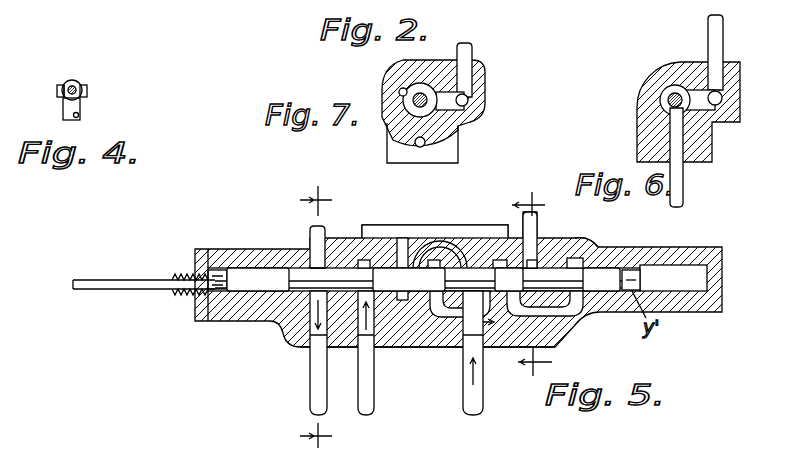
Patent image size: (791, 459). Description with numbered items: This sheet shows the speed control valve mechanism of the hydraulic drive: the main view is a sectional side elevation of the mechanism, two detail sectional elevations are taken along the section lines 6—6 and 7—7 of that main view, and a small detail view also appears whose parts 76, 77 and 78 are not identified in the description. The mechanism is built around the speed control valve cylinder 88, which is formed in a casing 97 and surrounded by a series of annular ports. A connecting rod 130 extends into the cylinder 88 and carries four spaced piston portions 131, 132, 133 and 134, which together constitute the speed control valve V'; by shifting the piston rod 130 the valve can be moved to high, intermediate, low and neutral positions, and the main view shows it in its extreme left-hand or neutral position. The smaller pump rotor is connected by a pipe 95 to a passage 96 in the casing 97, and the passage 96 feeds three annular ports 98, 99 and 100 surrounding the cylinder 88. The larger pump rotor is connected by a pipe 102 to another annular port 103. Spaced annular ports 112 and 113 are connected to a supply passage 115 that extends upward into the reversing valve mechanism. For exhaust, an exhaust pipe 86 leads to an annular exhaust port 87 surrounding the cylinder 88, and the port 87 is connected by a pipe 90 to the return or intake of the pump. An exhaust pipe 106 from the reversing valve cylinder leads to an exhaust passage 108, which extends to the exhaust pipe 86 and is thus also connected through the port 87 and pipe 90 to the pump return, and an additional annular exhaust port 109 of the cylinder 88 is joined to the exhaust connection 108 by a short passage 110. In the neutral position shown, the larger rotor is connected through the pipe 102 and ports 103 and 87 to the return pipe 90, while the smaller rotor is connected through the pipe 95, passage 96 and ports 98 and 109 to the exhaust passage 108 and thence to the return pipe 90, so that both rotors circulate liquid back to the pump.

In FIG. 4, the pin 76 is at (79, 115).
In FIG. 4, the head 77 is at (80, 84).
In FIG. 4, the nut 78 is at (65, 84).
In FIG. 6, the exhaust pipe 86 is at (715, 36).
In FIG. 5, the exhaust pipe 86 is at (322, 232).
In FIG. 6, the annular exhaust port 87 is at (687, 110).
In FIG. 5, the annular exhaust port 87 is at (316, 266).
In FIG. 6, the speed control valve cylinder 88 is at (667, 99).
In FIG. 5, the speed control valve cylinder 88 is at (296, 300).
In FIG. 6, the return pipe 90 is at (684, 175).
In FIG. 5, the return pipe 90 is at (311, 384).
In FIG. 5, the pipe 95 is at (480, 400).
In FIG. 7, the passage 96 is at (416, 143).
In FIG. 5, the passage 96 is at (540, 322).
In FIG. 5, the casing 97 is at (412, 347).
In FIG. 5, the annular port 98 is at (588, 240).
In FIG. 5, the annular port 99 is at (500, 260).
In FIG. 5, the annular port 100 is at (433, 260).
In FIG. 5, the pipe 102 is at (370, 400).
In FIG. 5, the annular port 103 is at (364, 260).
In FIG. 7, the exhaust pipe 106 is at (473, 50).
In FIG. 7, the exhaust passage 108 is at (468, 97).
In FIG. 6, the exhaust passage 108 is at (722, 98).
In FIG. 7, the annular exhaust port 109 is at (400, 92).
In FIG. 5, the annular exhaust port 109 is at (574, 258).
In FIG. 7, the short passage 110 is at (448, 103).
In FIG. 5, the annular port 112 is at (402, 260).
In FIG. 5, the annular port 113 is at (447, 241).
In FIG. 5, the supply passage 115 is at (460, 173).
In FIG. 5, the connecting rod 130 is at (129, 278).
In FIG. 5, the piston portion 131 is at (258, 279).
In FIG. 5, the piston portion 132 is at (409, 279).
In FIG. 5, the piston portion 133 is at (509, 279).
In FIG. 5, the piston portion 134 is at (601, 279).
In FIG. 5, the section line 6— 6 is at (309, 319).
In FIG. 5, the section line 7— 7 is at (525, 284).